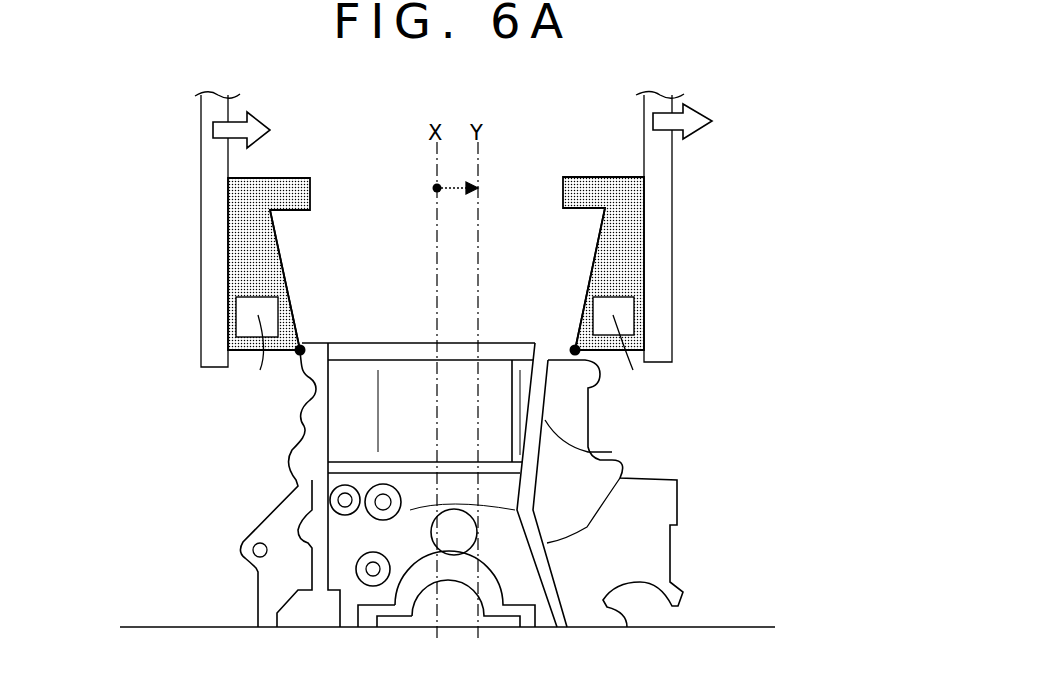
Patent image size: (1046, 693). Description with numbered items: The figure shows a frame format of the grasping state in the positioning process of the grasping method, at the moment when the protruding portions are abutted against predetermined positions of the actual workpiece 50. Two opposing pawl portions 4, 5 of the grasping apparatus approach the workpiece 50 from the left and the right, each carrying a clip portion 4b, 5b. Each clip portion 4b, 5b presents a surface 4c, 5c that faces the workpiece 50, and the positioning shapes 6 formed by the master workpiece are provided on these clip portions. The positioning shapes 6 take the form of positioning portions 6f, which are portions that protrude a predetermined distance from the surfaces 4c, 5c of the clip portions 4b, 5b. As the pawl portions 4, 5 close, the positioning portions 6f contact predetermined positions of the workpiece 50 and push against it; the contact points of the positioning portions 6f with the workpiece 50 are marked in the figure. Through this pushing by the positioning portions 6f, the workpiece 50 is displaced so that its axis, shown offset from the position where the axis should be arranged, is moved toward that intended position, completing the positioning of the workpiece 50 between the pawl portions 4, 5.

The pawl portion 4 is at (213, 245).
The clip portion 4b is at (201, 170).
The surface of clip portion 4c is at (242, 289).
The pawl portion 5 is at (663, 245).
The clip portion 5b is at (672, 168).
The surface of clip portion 5c is at (636, 287).
The positioning shape 6 is at (308, 250).
The positioning portion 6f is at (306, 350).
The workpiece 50 is at (697, 552).